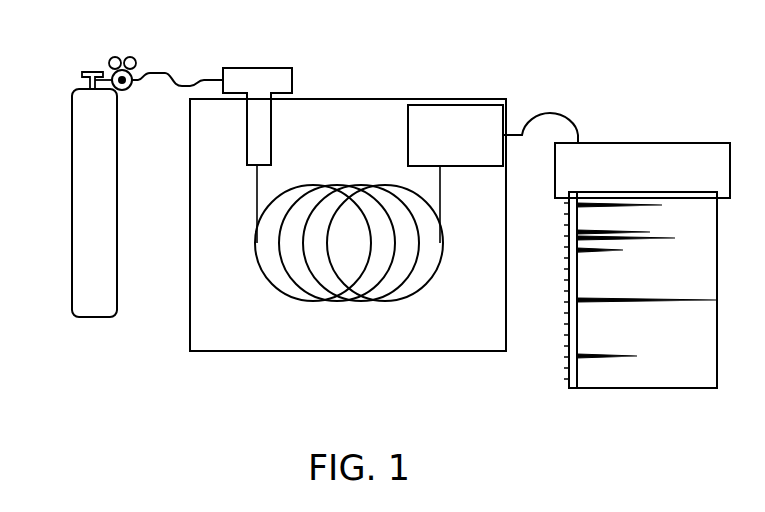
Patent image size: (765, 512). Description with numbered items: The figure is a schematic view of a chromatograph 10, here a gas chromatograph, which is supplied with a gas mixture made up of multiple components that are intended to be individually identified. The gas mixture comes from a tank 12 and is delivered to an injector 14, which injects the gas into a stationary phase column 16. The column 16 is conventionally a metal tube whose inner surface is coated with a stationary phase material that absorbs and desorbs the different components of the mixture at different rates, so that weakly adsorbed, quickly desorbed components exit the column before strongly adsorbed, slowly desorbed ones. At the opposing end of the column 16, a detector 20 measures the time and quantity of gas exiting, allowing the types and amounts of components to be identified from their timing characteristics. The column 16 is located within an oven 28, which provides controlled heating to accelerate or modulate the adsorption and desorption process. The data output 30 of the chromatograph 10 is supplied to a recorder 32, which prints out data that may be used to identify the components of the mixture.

The chromatograph 10 is at (453, 53).
The tank 12 is at (72, 123).
The injector 14 is at (240, 68).
The stationary phase column 16 is at (437, 277).
The detector 20 is at (408, 116).
The oven 28 is at (356, 352).
The data output 30 is at (536, 116).
The recorder 32 is at (703, 142).